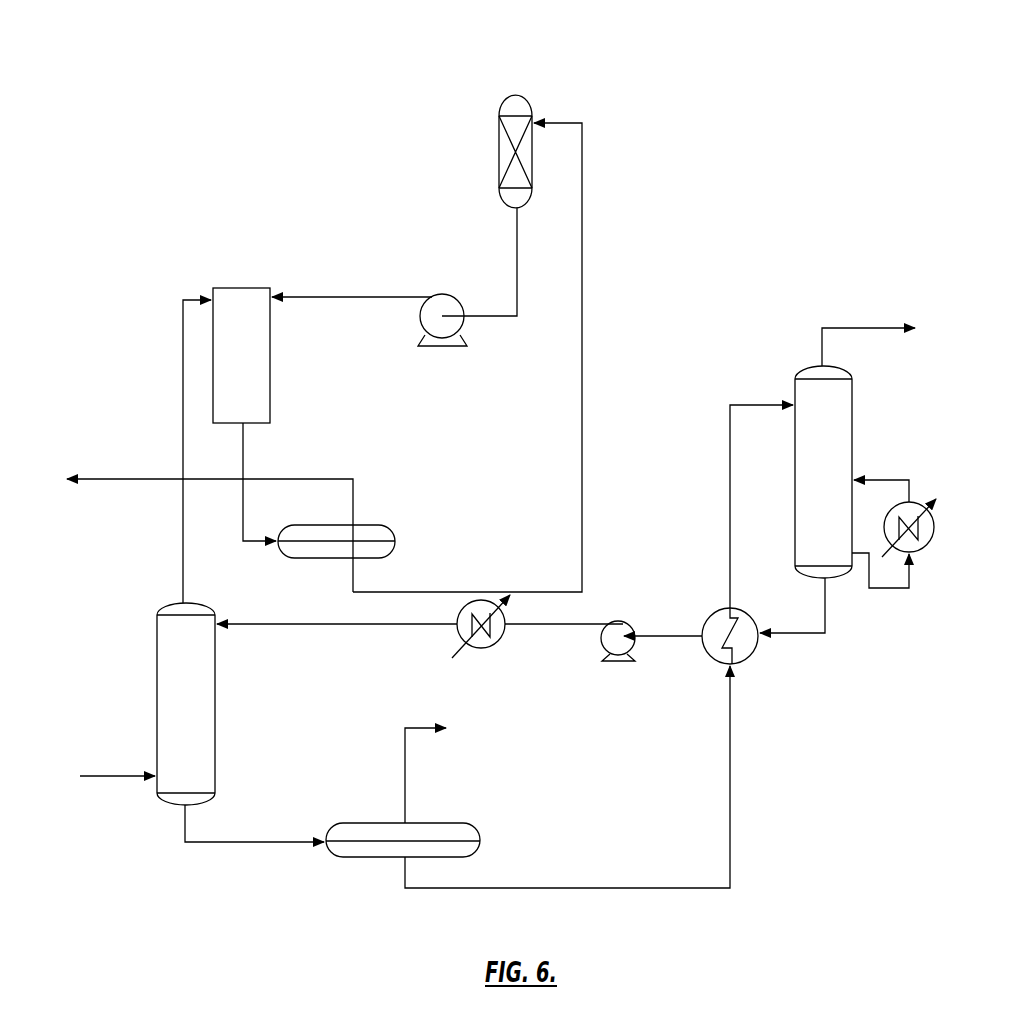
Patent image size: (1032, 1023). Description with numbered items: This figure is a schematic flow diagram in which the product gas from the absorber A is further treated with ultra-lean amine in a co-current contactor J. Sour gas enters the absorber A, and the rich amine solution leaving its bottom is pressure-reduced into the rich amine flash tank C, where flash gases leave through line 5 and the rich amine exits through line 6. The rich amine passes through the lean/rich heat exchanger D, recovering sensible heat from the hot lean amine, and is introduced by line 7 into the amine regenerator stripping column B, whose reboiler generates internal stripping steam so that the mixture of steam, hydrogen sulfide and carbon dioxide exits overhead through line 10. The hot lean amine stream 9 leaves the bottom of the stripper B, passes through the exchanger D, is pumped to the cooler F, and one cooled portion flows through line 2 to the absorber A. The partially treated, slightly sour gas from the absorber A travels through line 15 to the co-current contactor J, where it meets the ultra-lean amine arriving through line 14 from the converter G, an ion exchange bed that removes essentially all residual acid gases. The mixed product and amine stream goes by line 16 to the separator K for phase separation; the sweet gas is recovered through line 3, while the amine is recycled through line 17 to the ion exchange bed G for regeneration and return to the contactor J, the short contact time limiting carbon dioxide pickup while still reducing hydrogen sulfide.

The absorber A is at (157, 688).
The amine regenerator stripping column B is at (853, 452).
The rich amine flash tank C is at (375, 823).
The lean/rich heat exchanger D is at (744, 658).
The cooler F is at (483, 600).
The converter (ion exchange resin bed) G is at (500, 160).
The co-current contactor J is at (236, 288).
The separator K is at (320, 525).
The lean amine line to absorber 2 is at (290, 624).
The sweet gas line 3 is at (278, 479).
The flash gas line 5 is at (405, 797).
The rich amine line 6 is at (655, 888).
The heated rich amine feed line 7 is at (727, 473).
The hot lean amine stream 9 is at (827, 608).
The stripper overhead line 10 is at (825, 342).
The ultra-lean amine line 14 is at (350, 298).
The partially treated gas line 15 is at (183, 573).
The mixed product and amine line 16 is at (242, 495).
The amine recycle line 17 is at (582, 268).